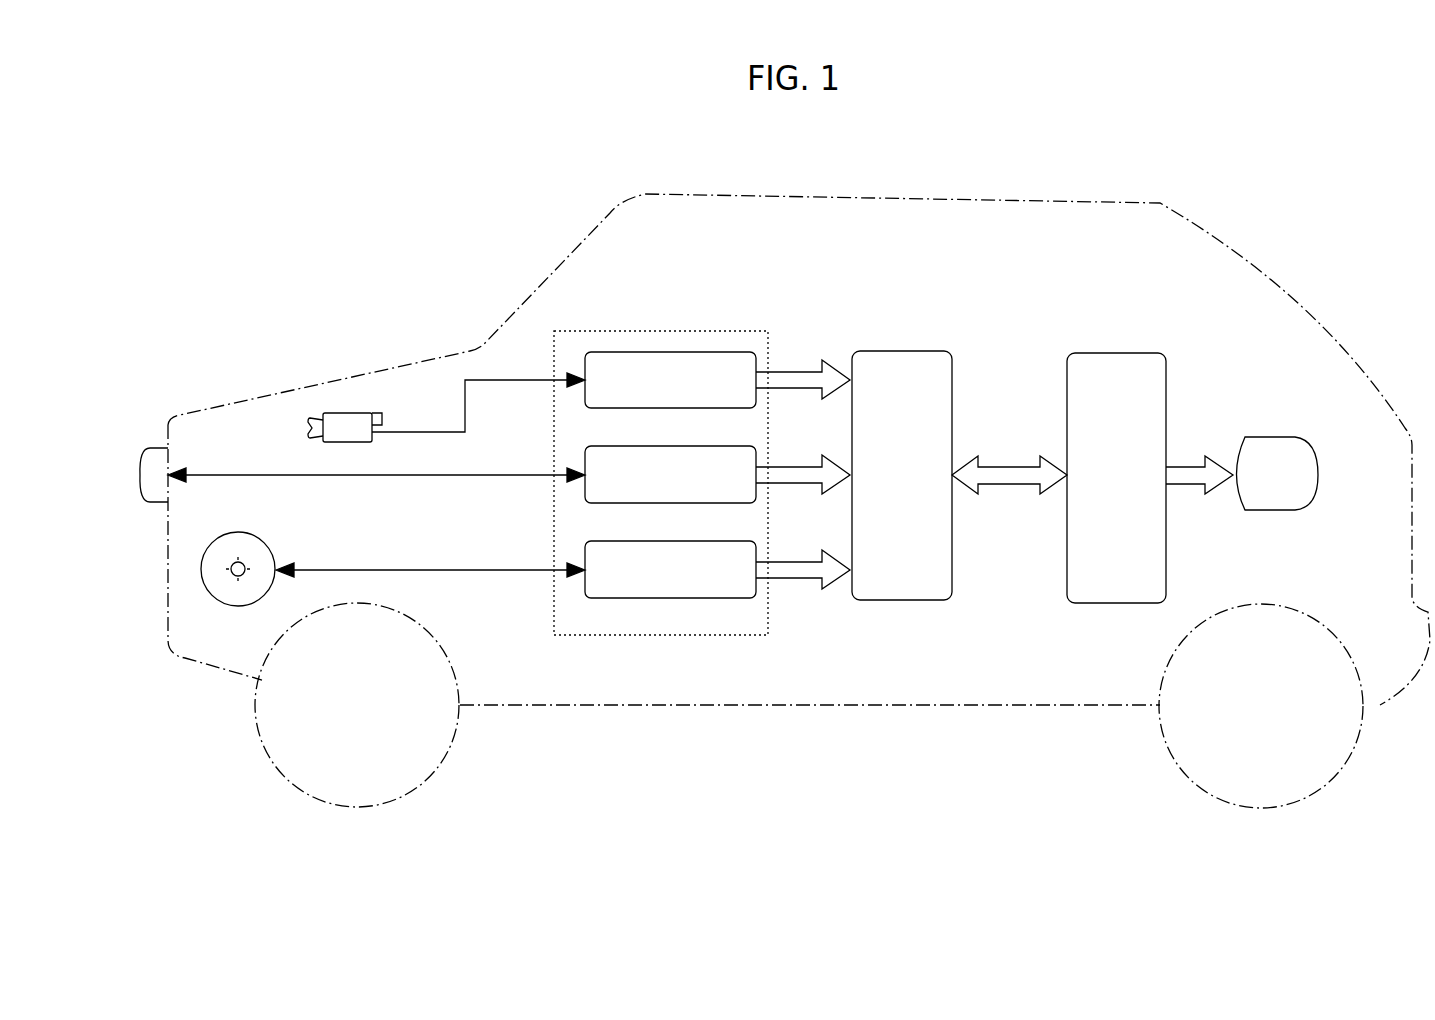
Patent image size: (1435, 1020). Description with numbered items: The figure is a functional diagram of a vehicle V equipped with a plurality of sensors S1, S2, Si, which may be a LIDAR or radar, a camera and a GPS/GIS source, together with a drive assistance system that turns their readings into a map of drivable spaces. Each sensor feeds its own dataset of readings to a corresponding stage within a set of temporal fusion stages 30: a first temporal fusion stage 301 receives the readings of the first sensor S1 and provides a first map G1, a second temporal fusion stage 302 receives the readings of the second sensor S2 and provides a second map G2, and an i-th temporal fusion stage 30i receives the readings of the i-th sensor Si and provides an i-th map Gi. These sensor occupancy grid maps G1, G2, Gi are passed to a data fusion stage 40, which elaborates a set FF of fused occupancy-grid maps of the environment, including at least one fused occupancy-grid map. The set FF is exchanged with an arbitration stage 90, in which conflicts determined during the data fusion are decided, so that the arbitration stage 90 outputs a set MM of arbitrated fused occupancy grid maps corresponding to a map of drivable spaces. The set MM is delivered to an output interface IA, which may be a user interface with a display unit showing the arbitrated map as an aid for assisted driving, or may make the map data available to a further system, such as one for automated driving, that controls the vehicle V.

The vehicle V is at (1015, 207).
The first sensor S1 is at (350, 422).
The second sensor S2 is at (153, 482).
The i-th sensor Si is at (262, 543).
The set of temporal fusion stages 30 is at (687, 337).
The first temporal fusion stage 301 is at (628, 400).
The second temporal fusion stage 302 is at (618, 493).
The i-th temporal fusion stage 30i is at (632, 592).
The first map G1 is at (803, 365).
The second map G2 is at (803, 460).
The i-th map Gi is at (803, 555).
The data fusion stage 40 is at (875, 357).
The set of fused occupancy-grid maps FF is at (1009, 464).
The arbitration stage 90 is at (1107, 367).
The set of arbitrated fused occupancy grid maps MM is at (1199, 459).
The output interface IA is at (1283, 488).